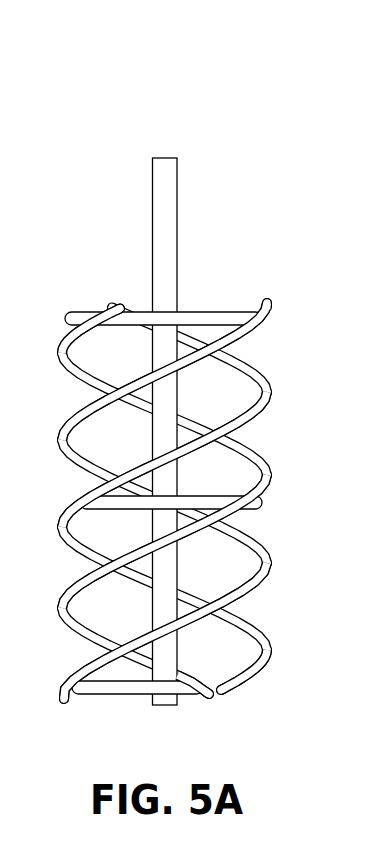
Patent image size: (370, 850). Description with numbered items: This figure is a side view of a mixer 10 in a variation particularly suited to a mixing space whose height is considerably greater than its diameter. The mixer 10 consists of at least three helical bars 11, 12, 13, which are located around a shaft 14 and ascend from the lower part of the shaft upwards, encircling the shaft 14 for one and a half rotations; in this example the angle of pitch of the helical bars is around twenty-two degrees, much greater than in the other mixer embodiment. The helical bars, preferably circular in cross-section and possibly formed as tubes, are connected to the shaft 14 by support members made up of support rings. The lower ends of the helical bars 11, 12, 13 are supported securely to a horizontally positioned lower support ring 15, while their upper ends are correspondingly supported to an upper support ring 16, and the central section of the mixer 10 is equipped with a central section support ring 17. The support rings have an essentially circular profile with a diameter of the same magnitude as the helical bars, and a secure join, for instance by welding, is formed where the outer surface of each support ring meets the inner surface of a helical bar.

The mixer 10 is at (202, 369).
The helical bar 11 is at (264, 642).
The helical bar 12 is at (263, 574).
The helical bar 13 is at (238, 444).
The shaft 14 is at (170, 236).
The lower support ring 15 is at (252, 692).
The upper support ring 16 is at (230, 318).
The central section support ring 17 is at (228, 501).